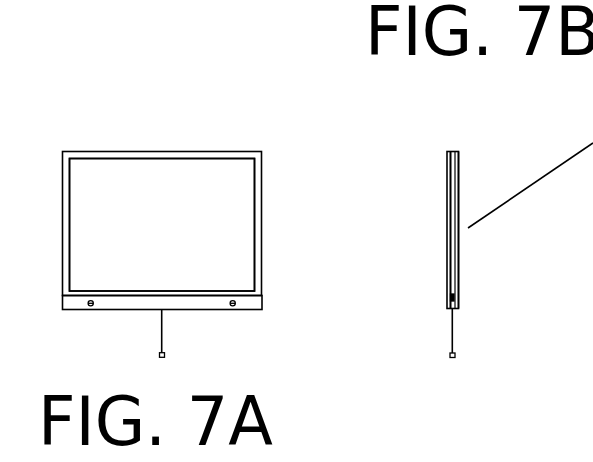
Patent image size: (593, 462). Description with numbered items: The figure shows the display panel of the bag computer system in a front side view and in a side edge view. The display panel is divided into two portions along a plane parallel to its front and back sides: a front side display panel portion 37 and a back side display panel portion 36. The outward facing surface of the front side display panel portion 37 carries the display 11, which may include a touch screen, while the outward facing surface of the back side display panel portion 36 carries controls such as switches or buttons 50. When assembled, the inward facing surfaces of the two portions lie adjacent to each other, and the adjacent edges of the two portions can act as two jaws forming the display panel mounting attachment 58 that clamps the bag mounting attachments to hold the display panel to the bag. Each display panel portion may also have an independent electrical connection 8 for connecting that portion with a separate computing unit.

In FIG. 7A, the display 11 is at (206, 227).
In FIG. 7B, the display 11 is at (438, 234).
In FIG. 7A, the front side display panel portion 37 is at (157, 147).
In FIG. 7B, the front side display panel portion 37 is at (441, 182).
In FIG. 7A, the independent electrical connection 8 is at (173, 339).
In FIG. 7B, the independent electrical connection 8 is at (448, 330).
In FIG. 7B, the back side display panel portion 36 is at (463, 175).
In FIG. 7B, the display panel mounting attachment 58 is at (495, 272).
In FIG. 7B, the switches or buttons 50 is at (592, 296).